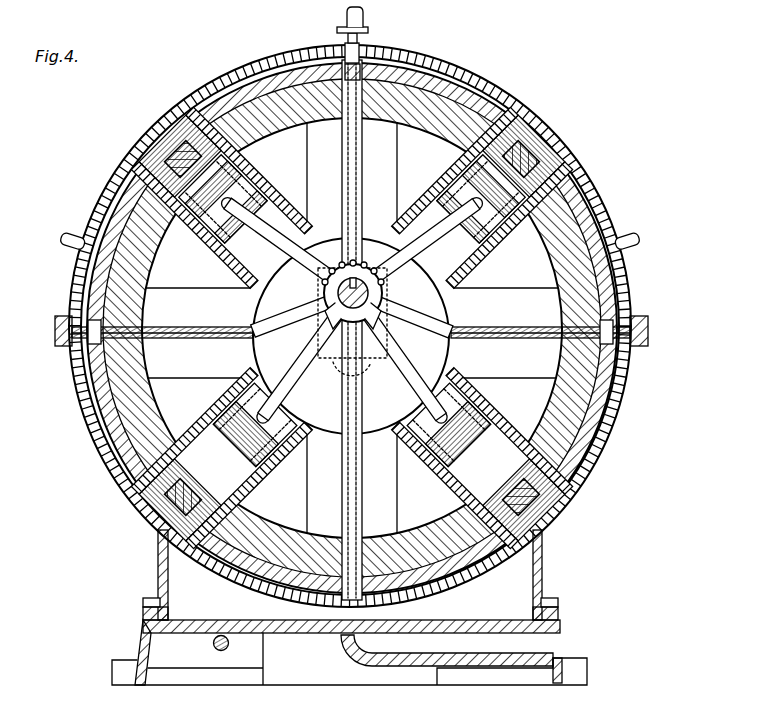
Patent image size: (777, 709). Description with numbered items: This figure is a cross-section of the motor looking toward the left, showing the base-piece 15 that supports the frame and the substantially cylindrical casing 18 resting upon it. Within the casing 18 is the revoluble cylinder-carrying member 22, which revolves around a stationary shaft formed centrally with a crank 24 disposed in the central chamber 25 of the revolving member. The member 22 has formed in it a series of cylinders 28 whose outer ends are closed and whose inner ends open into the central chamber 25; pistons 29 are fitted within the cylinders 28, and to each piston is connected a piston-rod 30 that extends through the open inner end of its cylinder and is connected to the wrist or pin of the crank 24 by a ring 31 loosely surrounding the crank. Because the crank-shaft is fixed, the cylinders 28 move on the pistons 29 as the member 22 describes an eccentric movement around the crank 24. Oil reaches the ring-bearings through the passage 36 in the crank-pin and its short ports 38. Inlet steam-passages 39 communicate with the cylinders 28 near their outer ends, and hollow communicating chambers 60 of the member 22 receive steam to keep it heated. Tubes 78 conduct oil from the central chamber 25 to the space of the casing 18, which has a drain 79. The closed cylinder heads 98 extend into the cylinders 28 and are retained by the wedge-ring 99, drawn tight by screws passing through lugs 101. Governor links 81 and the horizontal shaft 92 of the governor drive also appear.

The base-piece 15 is at (142, 630).
The casing 18 is at (88, 450).
The revoluble cylinder-carrying member 22 is at (108, 289).
The crank 24 is at (386, 316).
The central chamber 25 is at (351, 336).
The cylinders 28 is at (210, 250).
The pistons 29 is at (250, 192).
The piston-rods 30 is at (300, 274).
The ring 31 is at (343, 272).
The passage 36 is at (316, 300).
The short ports 38 is at (362, 270).
The inlet steam-passages 39 is at (180, 492).
The hollow communicating chambers 60 is at (200, 392).
The passages or tubes 78 is at (361, 192).
The drain 79 is at (560, 644).
The links 81 is at (358, 40).
The horizontal shaft 92 is at (216, 648).
The heads 98 is at (162, 172).
The annulus or ring 99 is at (446, 88).
The lugs 101 is at (536, 134).